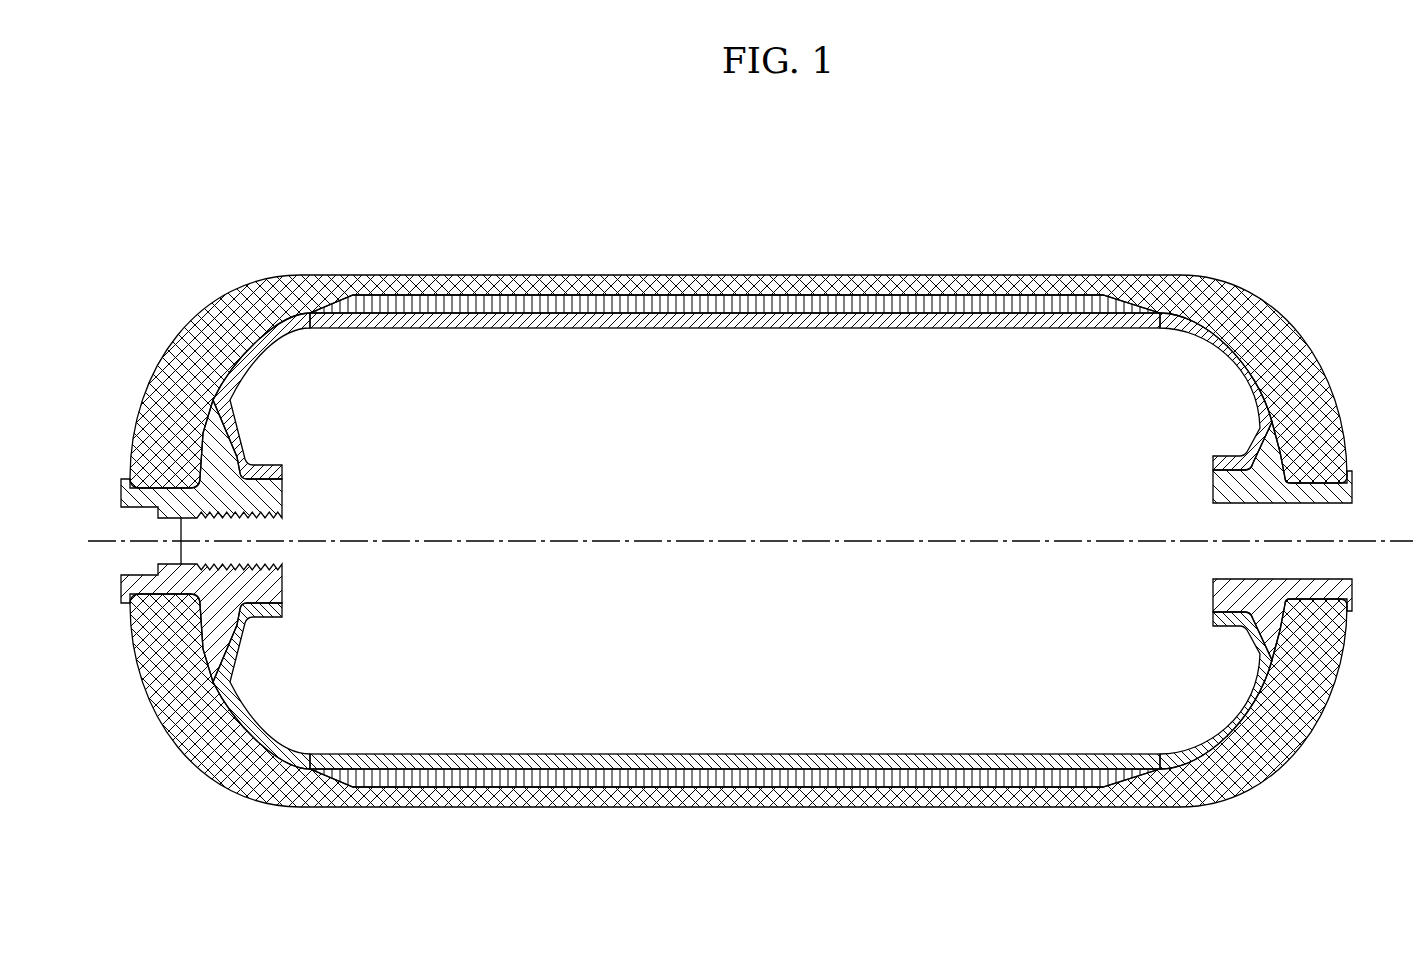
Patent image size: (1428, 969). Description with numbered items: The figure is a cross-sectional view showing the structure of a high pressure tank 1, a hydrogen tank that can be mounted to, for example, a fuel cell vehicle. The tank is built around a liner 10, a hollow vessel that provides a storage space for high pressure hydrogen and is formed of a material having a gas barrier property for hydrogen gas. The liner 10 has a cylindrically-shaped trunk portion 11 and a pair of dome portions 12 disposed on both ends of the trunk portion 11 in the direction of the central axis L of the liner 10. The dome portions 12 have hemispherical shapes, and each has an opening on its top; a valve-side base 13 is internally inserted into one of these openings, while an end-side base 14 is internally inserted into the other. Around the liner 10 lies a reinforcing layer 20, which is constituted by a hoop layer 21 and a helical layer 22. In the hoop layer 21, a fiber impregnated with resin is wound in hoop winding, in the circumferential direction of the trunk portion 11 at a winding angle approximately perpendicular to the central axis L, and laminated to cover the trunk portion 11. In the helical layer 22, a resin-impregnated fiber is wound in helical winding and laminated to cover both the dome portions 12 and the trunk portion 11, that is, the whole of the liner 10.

The high pressure tank 1 is at (1108, 186).
The liner 10 is at (862, 765).
The trunk portion 11 is at (575, 310).
The dome portion 12 is at (210, 322).
The valve-side base 13 is at (175, 438).
The end-side base 14 is at (1303, 450).
The reinforcing layer 20 is at (953, 807).
The hoop layer 21 is at (933, 305).
The helical layer 22 is at (1265, 328).
The central axis L is at (1375, 538).